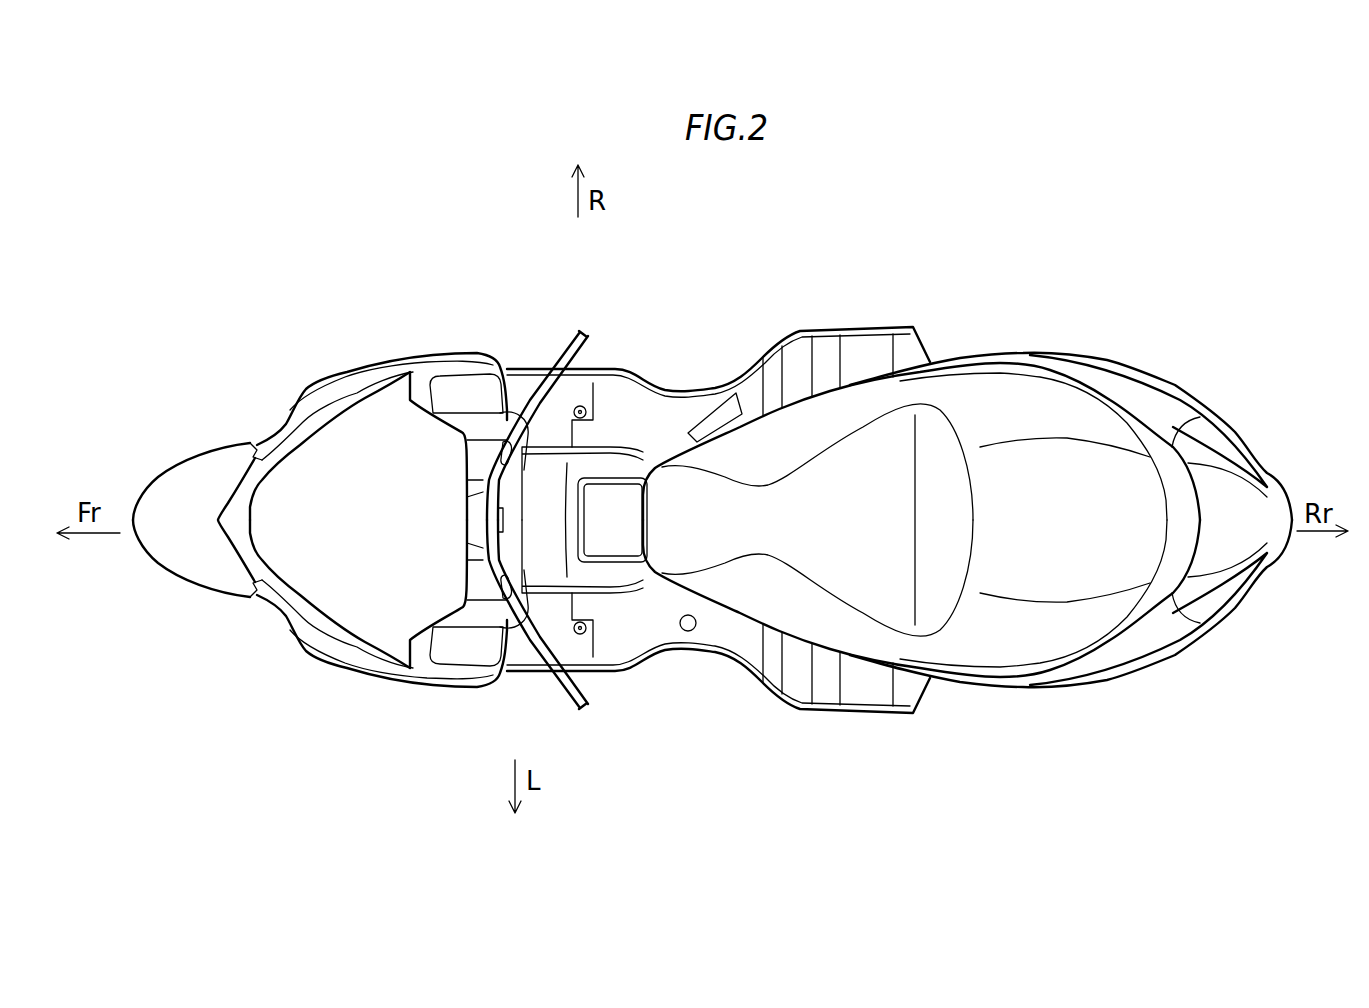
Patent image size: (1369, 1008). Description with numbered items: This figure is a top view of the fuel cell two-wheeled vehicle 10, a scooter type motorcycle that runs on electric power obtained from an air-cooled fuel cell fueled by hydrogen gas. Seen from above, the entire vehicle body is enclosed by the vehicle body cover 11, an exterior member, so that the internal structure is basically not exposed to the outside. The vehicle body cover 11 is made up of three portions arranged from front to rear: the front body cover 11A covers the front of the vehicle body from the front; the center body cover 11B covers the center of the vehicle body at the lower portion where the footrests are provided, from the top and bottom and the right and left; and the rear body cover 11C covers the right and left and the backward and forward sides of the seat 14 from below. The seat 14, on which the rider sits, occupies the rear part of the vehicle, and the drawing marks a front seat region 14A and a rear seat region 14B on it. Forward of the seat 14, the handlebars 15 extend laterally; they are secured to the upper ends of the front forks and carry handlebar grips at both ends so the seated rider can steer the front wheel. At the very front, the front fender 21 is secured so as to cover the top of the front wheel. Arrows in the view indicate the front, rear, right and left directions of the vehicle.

The fuel cell two-wheeled vehicle 10 is at (701, 304).
The vehicle body cover 11 is at (638, 445).
The front body cover 11A is at (337, 370).
The center body cover 11B is at (570, 600).
The rear body cover 11C is at (1085, 354).
The seat 14 is at (865, 450).
The rider seat portion 14A is at (817, 437).
The pillion seat portion 14B is at (1093, 480).
The handlebars 15 is at (530, 370).
The front fender 21 is at (186, 459).